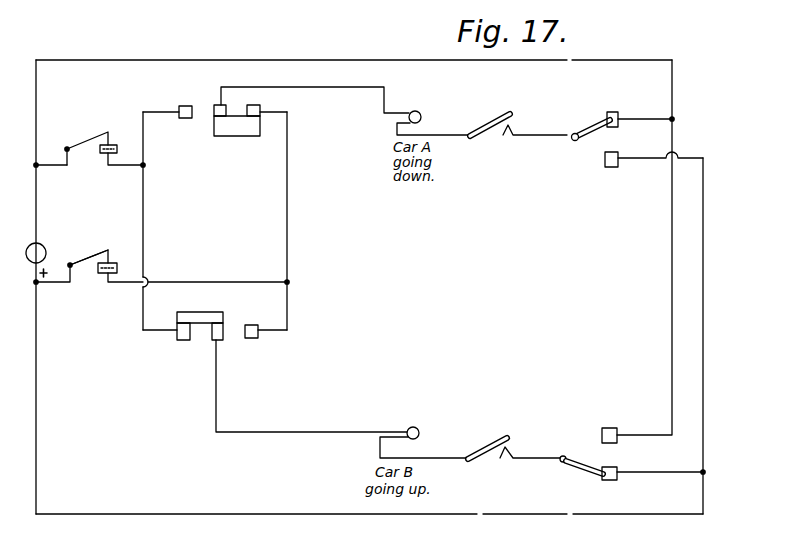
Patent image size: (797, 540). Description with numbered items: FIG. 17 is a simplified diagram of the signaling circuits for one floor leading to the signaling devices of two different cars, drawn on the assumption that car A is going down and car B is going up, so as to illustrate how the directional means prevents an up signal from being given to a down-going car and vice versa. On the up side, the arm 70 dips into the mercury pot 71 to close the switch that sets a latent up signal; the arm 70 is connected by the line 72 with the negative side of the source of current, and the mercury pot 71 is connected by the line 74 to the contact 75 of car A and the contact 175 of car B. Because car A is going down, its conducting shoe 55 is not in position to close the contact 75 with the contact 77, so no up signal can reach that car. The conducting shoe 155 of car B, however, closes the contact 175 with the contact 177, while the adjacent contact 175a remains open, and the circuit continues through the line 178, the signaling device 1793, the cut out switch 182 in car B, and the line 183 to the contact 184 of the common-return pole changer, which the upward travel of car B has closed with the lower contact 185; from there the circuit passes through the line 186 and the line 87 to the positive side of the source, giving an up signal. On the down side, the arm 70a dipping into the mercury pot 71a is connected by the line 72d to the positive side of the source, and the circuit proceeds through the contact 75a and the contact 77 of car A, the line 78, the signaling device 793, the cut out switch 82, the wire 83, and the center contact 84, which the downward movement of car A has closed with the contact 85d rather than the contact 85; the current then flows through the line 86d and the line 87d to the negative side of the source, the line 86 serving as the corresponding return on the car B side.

The line 87d is at (395, 50).
The line 87 is at (497, 486).
The line 86 is at (708, 405).
The line 72 is at (60, 166).
The arm 70 is at (73, 146).
The mercury pot 71 is at (115, 146).
The line 74 is at (118, 166).
The contact 75 is at (183, 106).
The conducting shoe 55 is at (230, 127).
The contact 77 is at (220, 105).
The relay terminal 75a is at (253, 118).
The line 78 is at (356, 87).
The signaling device 793 is at (420, 112).
The cut out switch 82 is at (484, 128).
The wire 83 is at (537, 135).
The center contact 84 is at (588, 138).
The contact 85d is at (608, 112).
The line 86d is at (651, 119).
The contact 85 is at (609, 167).
The line 72d is at (57, 278).
The switch blade 70a is at (82, 275).
The switch contact 71a is at (100, 277).
The conducting shoe 155 is at (197, 305).
The contact 175 is at (183, 338).
The contact 177 is at (213, 338).
The relay contact 175a is at (250, 340).
The line 178 is at (350, 420).
The signaling device 1793 is at (440, 412).
The cut out switch 182 is at (490, 450).
The line 183 is at (545, 448).
The contact 184 is at (580, 452).
The lower contact 185 is at (605, 479).
The line 186 is at (650, 472).